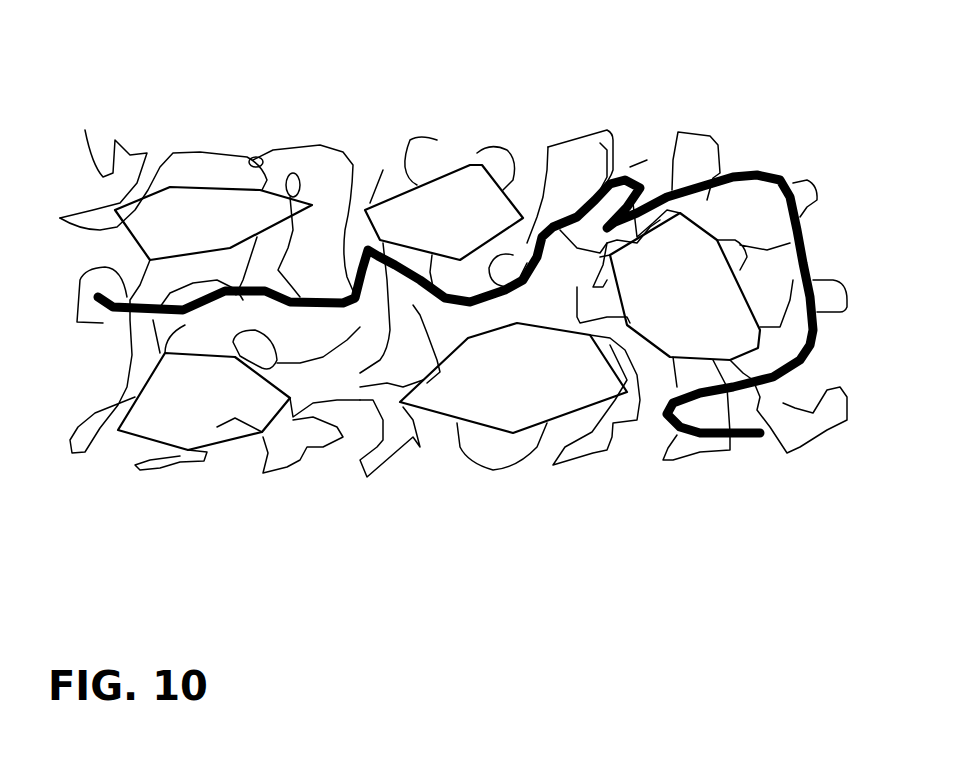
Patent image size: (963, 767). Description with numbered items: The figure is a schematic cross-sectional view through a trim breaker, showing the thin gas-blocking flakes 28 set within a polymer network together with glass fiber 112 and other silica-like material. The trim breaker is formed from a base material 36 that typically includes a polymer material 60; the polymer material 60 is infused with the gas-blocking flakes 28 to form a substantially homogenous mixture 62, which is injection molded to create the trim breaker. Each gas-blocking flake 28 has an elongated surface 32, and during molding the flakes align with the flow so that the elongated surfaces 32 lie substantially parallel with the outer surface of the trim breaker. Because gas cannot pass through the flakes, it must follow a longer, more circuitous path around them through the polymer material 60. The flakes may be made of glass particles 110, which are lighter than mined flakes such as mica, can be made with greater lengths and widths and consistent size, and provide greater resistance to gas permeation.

The gas-blocking flake 28 is at (122, 448).
The elongated surface 32 is at (173, 395).
The base material 36 is at (797, 147).
The polymer material 60 is at (302, 145).
The homogenous mixture 62 is at (633, 130).
The glass particles 110 is at (218, 428).
The glass fiber 112 is at (815, 247).